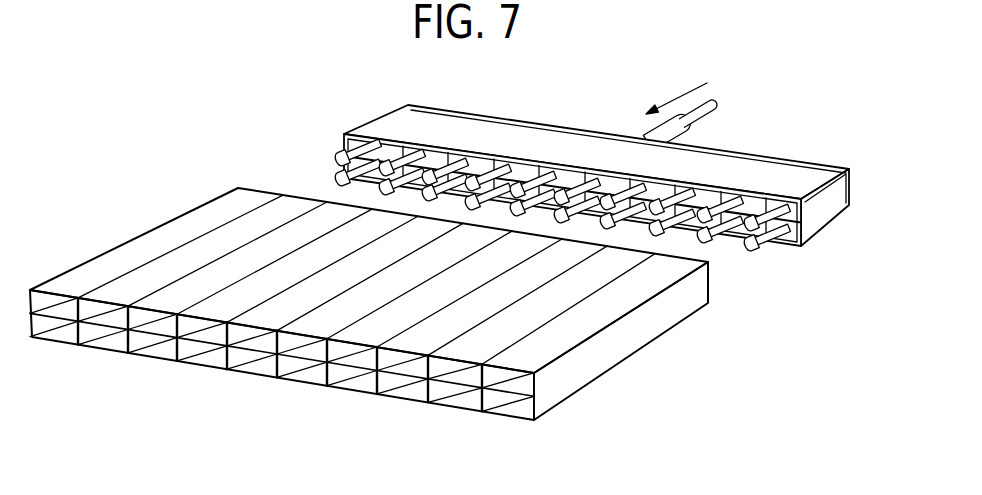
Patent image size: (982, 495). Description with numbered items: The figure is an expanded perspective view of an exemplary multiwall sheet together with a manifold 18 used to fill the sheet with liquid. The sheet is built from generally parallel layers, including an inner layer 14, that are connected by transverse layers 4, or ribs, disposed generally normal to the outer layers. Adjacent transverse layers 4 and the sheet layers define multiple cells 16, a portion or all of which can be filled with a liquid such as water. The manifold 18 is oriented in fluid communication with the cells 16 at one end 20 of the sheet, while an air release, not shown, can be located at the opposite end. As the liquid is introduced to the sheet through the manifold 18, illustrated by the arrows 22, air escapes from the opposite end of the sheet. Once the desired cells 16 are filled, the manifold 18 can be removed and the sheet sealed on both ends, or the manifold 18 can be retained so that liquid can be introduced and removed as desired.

The transverse layer 4 is at (333, 353).
The inner layer 14 is at (369, 295).
The cells 16 is at (207, 350).
The manifold 18 is at (587, 160).
The end of the sheet 20 is at (238, 188).
The arrows 22 is at (438, 170).